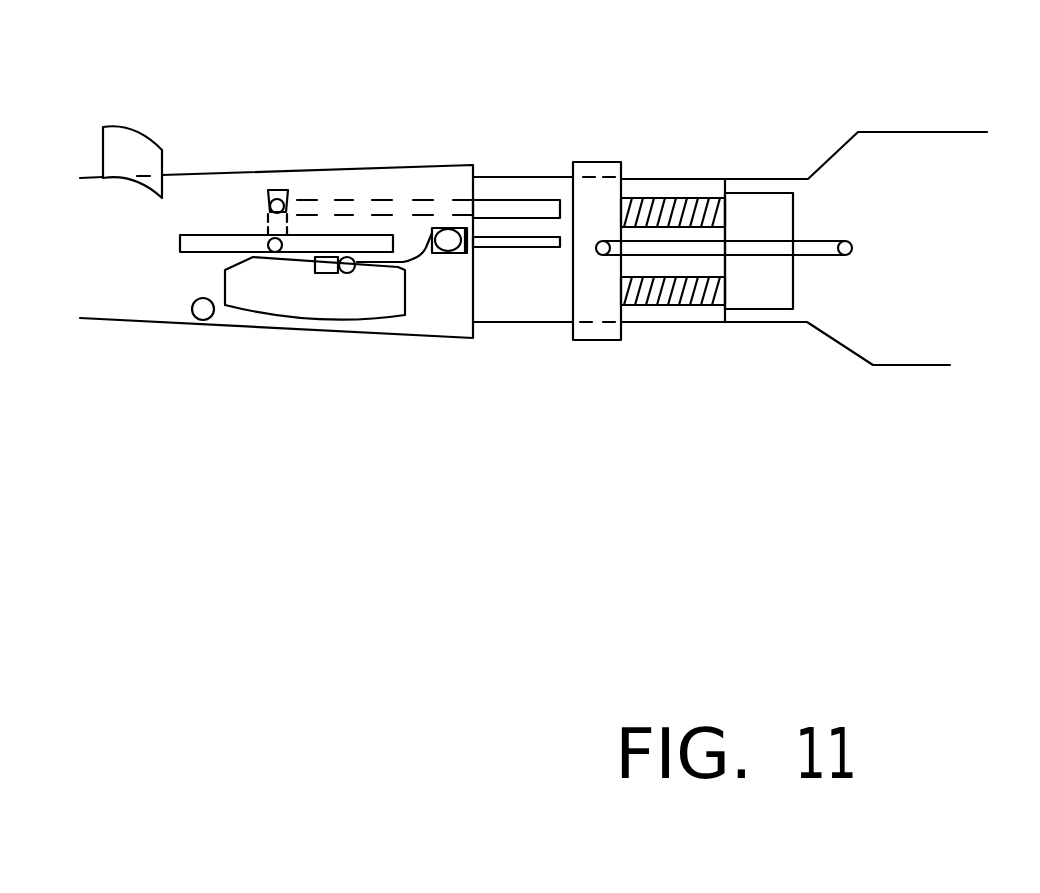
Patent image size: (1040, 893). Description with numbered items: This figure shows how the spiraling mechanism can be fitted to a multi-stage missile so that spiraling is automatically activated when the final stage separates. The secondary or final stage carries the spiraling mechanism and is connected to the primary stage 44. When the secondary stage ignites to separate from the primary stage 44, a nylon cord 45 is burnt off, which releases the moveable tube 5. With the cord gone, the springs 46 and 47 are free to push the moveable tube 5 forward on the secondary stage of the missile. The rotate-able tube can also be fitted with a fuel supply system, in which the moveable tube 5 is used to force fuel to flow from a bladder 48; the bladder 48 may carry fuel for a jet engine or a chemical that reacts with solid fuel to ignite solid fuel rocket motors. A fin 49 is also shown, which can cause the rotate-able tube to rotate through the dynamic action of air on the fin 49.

The moveable tube 5 is at (598, 297).
The primary stage 44 is at (890, 323).
The nylon cord 45 is at (757, 247).
The spring 46 is at (655, 208).
The spring 47 is at (660, 293).
The bladder 48 is at (447, 247).
The fin 49 is at (137, 152).